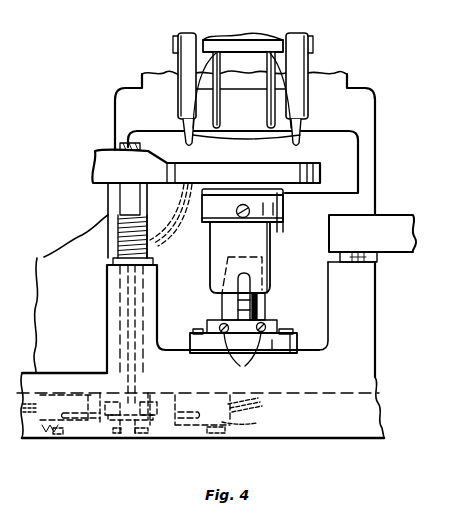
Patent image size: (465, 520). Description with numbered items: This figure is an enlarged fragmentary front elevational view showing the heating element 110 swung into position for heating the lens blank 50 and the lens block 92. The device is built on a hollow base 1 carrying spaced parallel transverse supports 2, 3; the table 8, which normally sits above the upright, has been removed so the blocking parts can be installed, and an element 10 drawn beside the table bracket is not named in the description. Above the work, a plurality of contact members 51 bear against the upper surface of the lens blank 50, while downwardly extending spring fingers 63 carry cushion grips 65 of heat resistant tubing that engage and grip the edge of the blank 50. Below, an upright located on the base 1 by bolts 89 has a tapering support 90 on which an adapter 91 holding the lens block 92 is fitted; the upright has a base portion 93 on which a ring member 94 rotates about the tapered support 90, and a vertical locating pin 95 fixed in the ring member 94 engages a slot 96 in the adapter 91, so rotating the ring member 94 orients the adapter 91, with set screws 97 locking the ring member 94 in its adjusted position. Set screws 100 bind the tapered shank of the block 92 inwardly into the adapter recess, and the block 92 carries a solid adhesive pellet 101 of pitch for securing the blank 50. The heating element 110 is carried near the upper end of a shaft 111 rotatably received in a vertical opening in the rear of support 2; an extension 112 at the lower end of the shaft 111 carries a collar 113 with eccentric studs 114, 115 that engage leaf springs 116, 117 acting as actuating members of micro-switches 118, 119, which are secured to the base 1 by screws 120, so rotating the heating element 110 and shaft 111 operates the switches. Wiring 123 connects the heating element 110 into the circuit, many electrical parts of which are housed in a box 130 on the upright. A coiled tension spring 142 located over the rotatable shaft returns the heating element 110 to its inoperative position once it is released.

The hollow base 1 is at (333, 428).
The transverse support 2 is at (106, 330).
The transverse support 3 is at (369, 307).
The table 8 is at (414, 240).
The fastener 10 is at (366, 258).
The lens blank 50 is at (262, 140).
The contact members 51 is at (266, 118).
The spring fingers 63 is at (181, 98).
The cushion grips 65 is at (185, 138).
The bolts 89 is at (197, 331).
The tapering support 90 is at (265, 297).
The adapter 91 is at (272, 238).
The lens block 92 is at (285, 205).
The base portion 93 is at (192, 347).
The ring member 94 is at (276, 320).
The locating pin 95 is at (238, 312).
The slot 96 is at (248, 276).
The set screws 97 is at (243, 359).
The set screws 100 is at (236, 212).
The adhesive pellet 101 is at (280, 191).
The heating element 110 is at (322, 166).
The shaft 111 is at (126, 202).
The extension 112 is at (112, 440).
The collar 113 is at (160, 398).
The stud 114 is at (97, 440).
The stud 115 is at (150, 440).
The leaf spring 116 is at (90, 440).
The leaf spring 117 is at (178, 440).
The micro-switch 118 is at (47, 440).
The micro-switch 119 is at (235, 423).
The screws 120 is at (66, 440).
The wiring 123 is at (169, 232).
The box 130 is at (64, 293).
The coiled tension spring 142 is at (117, 238).